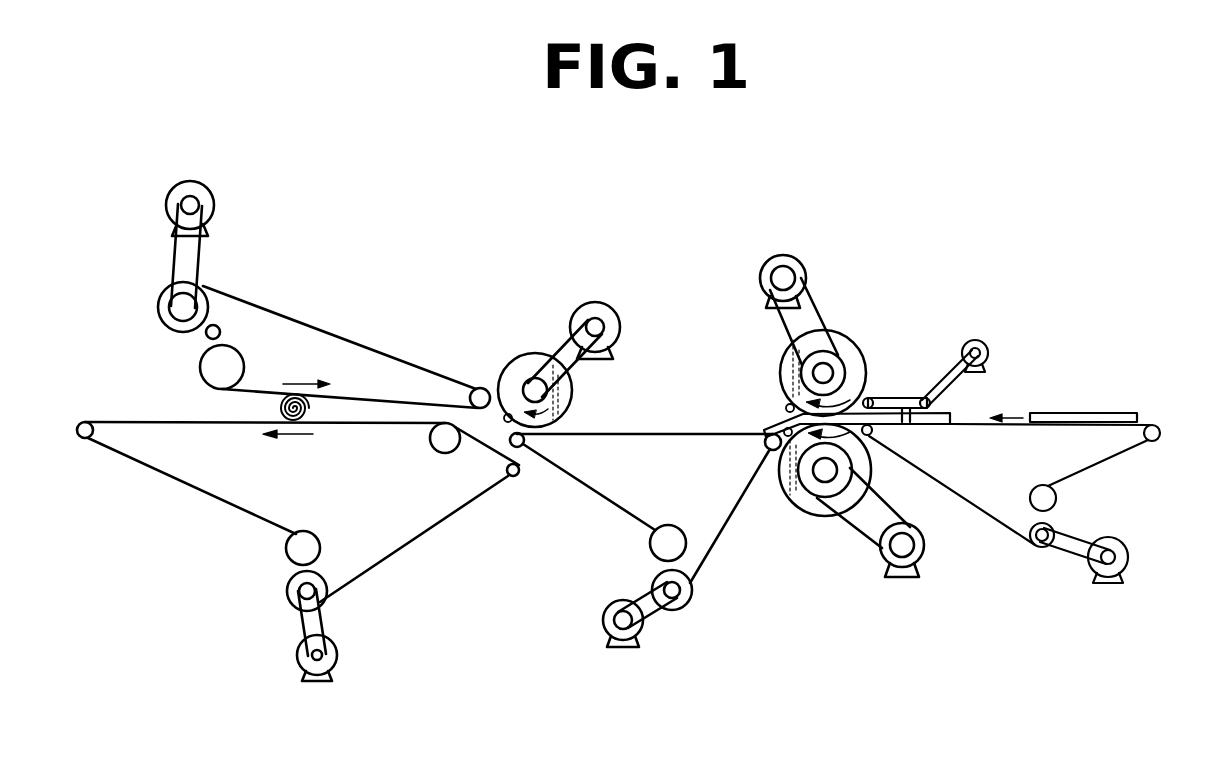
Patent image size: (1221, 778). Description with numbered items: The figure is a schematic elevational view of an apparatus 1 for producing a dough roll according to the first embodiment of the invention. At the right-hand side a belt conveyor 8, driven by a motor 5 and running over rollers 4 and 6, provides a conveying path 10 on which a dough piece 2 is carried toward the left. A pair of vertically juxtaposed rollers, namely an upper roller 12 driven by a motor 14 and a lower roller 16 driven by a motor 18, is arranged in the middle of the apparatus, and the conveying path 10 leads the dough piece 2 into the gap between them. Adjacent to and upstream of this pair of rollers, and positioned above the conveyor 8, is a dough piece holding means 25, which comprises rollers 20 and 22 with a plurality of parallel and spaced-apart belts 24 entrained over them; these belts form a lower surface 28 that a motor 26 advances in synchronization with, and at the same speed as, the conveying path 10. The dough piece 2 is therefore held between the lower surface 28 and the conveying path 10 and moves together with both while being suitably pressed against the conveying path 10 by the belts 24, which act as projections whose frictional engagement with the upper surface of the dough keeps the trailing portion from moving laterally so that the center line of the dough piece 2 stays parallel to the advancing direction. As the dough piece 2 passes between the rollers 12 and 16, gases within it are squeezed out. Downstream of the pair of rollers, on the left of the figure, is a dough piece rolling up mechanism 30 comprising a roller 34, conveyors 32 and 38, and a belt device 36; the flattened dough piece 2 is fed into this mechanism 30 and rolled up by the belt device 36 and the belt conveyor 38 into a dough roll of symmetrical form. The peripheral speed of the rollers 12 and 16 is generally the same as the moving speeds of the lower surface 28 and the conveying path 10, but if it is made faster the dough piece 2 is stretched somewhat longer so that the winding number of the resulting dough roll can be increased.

The apparatus 1 is at (702, 223).
The dough piece 2 is at (1130, 412).
The roller 4 is at (1160, 438).
The motor 5 is at (1127, 550).
The roller 6 is at (872, 435).
The belt conveyor 8 is at (1113, 457).
The conveying path 10 is at (968, 407).
The upper roller 12 is at (782, 360).
The motor 14 is at (798, 257).
The lower roller 16 is at (820, 517).
The motor 18 is at (913, 577).
The roller 20 is at (873, 397).
The roller 22 is at (940, 407).
The belts 24 is at (905, 397).
The dough piece holding means 25 is at (925, 372).
The motor 26 is at (983, 343).
The lower surface 28 is at (920, 414).
The dough piece rolling up mechanism 30 is at (595, 242).
The conveyor 32 is at (710, 567).
The roller 34 is at (505, 368).
The belt device 36 is at (328, 333).
The belt conveyor 38 is at (397, 557).